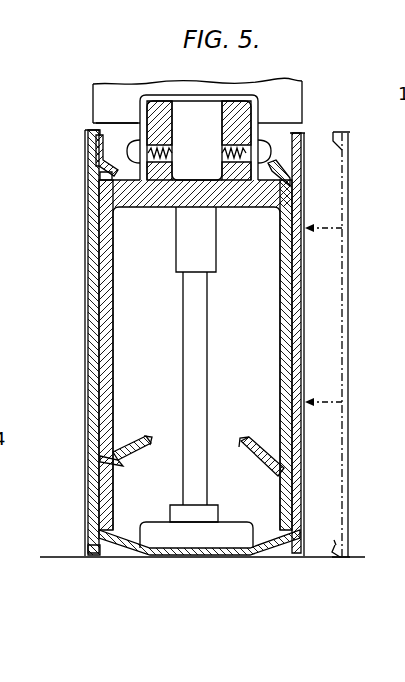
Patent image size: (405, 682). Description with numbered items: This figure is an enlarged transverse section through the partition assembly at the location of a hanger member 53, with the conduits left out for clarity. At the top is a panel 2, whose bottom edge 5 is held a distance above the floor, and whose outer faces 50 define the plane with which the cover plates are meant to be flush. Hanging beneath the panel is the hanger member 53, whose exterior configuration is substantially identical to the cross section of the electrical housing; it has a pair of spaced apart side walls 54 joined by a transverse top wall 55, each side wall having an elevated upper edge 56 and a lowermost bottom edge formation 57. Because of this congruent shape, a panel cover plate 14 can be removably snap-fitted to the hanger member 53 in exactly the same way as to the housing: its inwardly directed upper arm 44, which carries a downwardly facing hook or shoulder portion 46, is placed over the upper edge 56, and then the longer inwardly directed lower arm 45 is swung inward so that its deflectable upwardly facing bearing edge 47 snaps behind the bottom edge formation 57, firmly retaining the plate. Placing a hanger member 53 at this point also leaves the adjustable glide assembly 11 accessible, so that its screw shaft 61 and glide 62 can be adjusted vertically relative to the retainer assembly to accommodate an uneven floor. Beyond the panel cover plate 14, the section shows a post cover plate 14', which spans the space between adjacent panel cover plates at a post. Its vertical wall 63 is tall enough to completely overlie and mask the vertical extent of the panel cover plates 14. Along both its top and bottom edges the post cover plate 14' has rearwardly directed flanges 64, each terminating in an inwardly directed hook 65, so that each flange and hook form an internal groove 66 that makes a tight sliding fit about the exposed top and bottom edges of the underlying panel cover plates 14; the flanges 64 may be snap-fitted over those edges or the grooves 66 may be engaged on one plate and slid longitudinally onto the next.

The panel 2 is at (262, 88).
The bottom edge 5 is at (124, 127).
The adjustable glide assembly 11 is at (180, 334).
The panel cover plate 14 is at (169, 342).
The post cover plate 14' is at (213, 343).
The upper arm 44 is at (267, 200).
The lower arm 45 is at (121, 463).
The hook or shoulder portion 46 is at (98, 160).
The bearing edge 47 is at (258, 442).
The panel outer face 50 is at (305, 92).
The hanger member 53 is at (274, 293).
The side wall 54 is at (113, 288).
The top wall 55 is at (170, 205).
The upper edge 56 is at (103, 185).
The bottom edge formation 57 is at (120, 445).
The screw shaft 61 is at (206, 313).
The glide 62 is at (197, 548).
The vertical wall 63 is at (348, 378).
The flange 64 is at (348, 133).
The hook 65 is at (337, 142).
The groove 66 is at (341, 151).